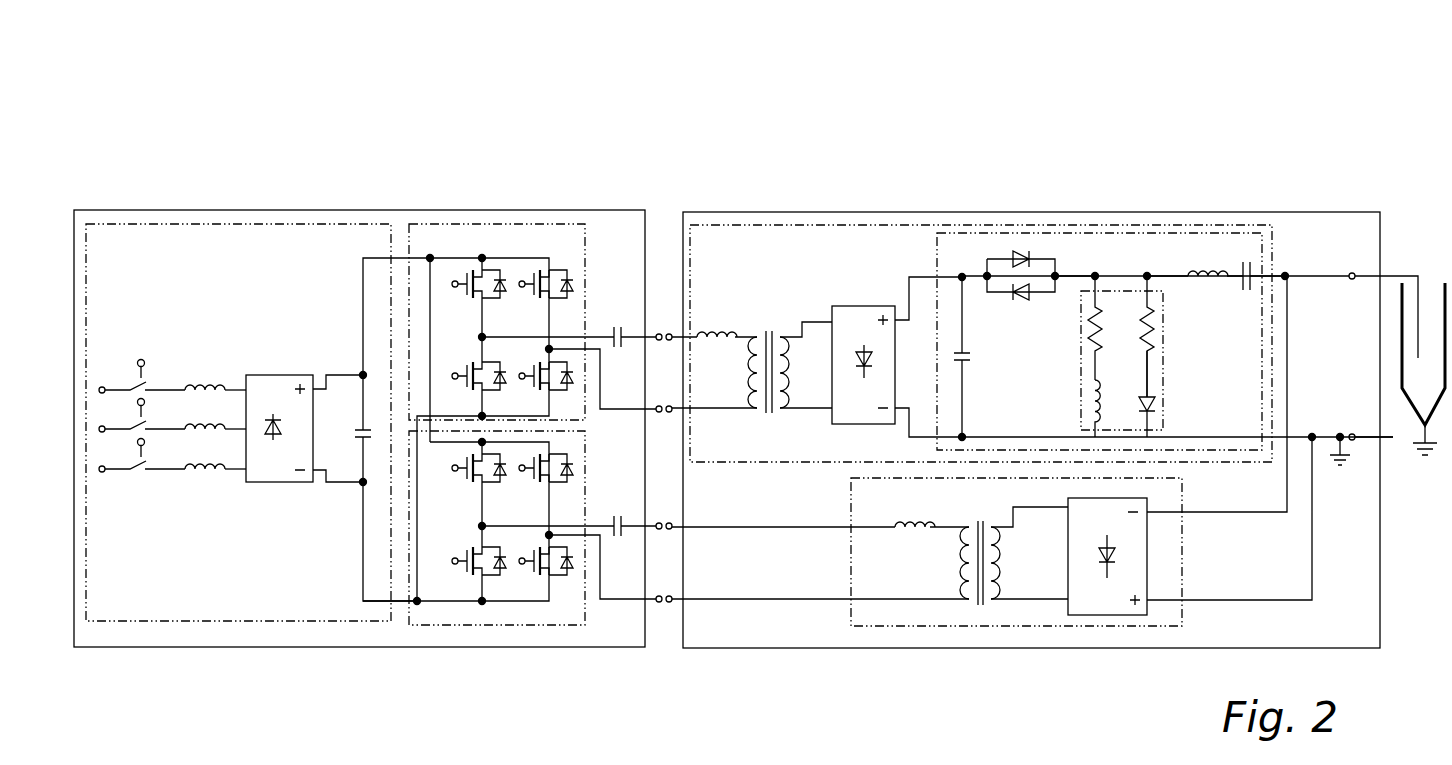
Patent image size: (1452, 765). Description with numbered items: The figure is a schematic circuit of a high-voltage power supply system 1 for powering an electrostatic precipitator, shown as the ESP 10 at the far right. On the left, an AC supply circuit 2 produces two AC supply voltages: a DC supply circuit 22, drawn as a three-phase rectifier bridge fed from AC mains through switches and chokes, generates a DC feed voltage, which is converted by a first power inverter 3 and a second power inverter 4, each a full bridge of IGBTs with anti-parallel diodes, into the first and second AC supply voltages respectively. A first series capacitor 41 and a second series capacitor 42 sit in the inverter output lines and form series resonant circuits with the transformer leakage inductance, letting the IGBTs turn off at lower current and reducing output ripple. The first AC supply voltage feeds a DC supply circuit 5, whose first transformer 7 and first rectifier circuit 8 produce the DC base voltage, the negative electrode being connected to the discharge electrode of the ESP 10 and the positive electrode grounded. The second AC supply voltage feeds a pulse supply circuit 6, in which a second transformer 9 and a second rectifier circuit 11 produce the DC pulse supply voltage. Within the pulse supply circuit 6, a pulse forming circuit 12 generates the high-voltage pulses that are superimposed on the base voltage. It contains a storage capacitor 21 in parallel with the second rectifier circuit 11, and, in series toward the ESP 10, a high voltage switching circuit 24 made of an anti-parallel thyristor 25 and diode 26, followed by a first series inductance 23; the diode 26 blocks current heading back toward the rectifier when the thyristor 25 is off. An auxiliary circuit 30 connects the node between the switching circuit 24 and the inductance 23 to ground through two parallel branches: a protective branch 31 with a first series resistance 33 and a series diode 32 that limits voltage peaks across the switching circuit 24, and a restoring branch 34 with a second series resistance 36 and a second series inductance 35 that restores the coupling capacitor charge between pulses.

The high-voltage power supply system 1 is at (926, 108).
The AC supply circuit 2 is at (236, 648).
The first power inverter 3 is at (586, 627).
The second power inverter 4 is at (553, 224).
The DC supply circuit 5 is at (1021, 628).
The pulse supply circuit 6 is at (1333, 212).
The first transformer 7 is at (968, 614).
The first rectifier circuit 8 is at (1105, 616).
The second transformer 9 is at (756, 420).
The ESP 10 is at (1430, 279).
The second rectifier circuit 11 is at (871, 409).
The pulse forming circuit 12 is at (1217, 233).
The storage capacitor 21 is at (971, 366).
The DC supply circuit 22 is at (196, 224).
The first series inductance 23 is at (1262, 290).
The high voltage switching circuit 24 is at (1063, 270).
The thyristor 25 is at (1019, 301).
The diode 26 is at (1019, 254).
The auxiliary circuit 30 is at (1160, 410).
The protective branch 31 is at (1168, 281).
The series diode 32 is at (1165, 398).
The first series resistance 33 is at (1156, 306).
The restoring branch 34 is at (1102, 279).
The second series inductance 35 is at (1097, 398).
The second series resistance 36 is at (1089, 316).
The first series capacitor 41 is at (628, 518).
The second series capacitor 42 is at (626, 330).